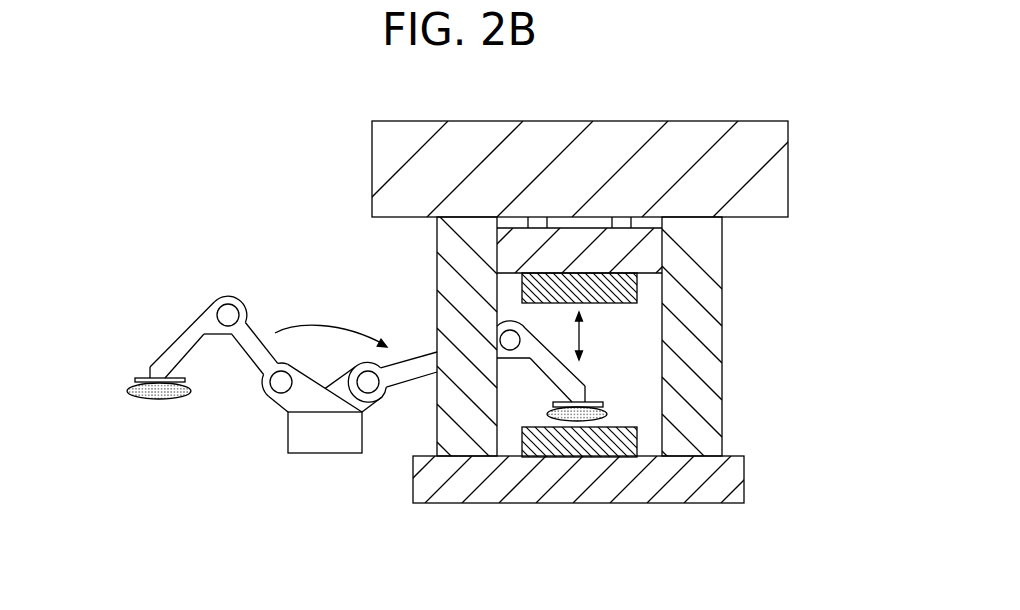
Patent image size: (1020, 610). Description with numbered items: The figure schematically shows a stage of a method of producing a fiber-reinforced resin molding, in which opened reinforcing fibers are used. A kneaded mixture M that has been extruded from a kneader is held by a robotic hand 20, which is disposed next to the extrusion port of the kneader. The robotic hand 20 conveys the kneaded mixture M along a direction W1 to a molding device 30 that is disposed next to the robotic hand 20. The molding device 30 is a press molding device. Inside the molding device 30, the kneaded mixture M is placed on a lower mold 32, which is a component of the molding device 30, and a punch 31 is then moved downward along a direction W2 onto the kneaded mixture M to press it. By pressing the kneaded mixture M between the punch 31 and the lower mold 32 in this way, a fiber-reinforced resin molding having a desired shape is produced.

The robotic hand 20 is at (248, 443).
The molding device 30 is at (602, 329).
The punch 31 is at (622, 288).
The lower mold 32 is at (636, 448).
The kneaded mixture M is at (163, 400).
The direction W1 is at (331, 323).
The direction W2 is at (599, 336).